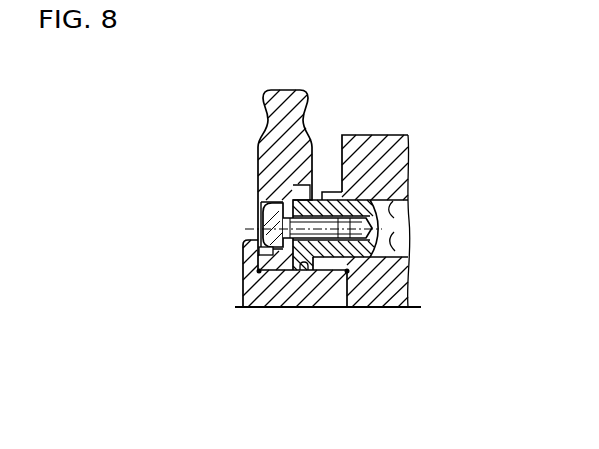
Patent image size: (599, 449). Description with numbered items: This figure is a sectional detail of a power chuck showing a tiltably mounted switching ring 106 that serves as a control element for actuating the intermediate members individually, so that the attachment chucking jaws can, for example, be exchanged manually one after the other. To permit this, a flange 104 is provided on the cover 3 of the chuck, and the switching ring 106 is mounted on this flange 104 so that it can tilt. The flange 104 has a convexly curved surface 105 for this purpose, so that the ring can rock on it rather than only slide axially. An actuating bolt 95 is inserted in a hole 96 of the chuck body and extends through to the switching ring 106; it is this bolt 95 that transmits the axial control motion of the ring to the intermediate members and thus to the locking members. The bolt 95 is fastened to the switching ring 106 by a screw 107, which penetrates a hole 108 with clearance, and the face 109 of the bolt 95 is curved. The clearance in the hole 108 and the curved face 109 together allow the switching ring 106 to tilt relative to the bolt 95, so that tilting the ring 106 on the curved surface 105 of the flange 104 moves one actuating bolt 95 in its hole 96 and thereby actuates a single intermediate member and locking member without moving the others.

The cover 3 is at (368, 283).
The actuating bolt 95 is at (406, 249).
The hole 96 is at (406, 220).
The flange 104 is at (267, 290).
The convexly curved surface 105 is at (297, 272).
The switching ring 106 is at (297, 91).
The screw 107 is at (270, 235).
The hole 108 is at (263, 209).
The face 109 is at (298, 187).